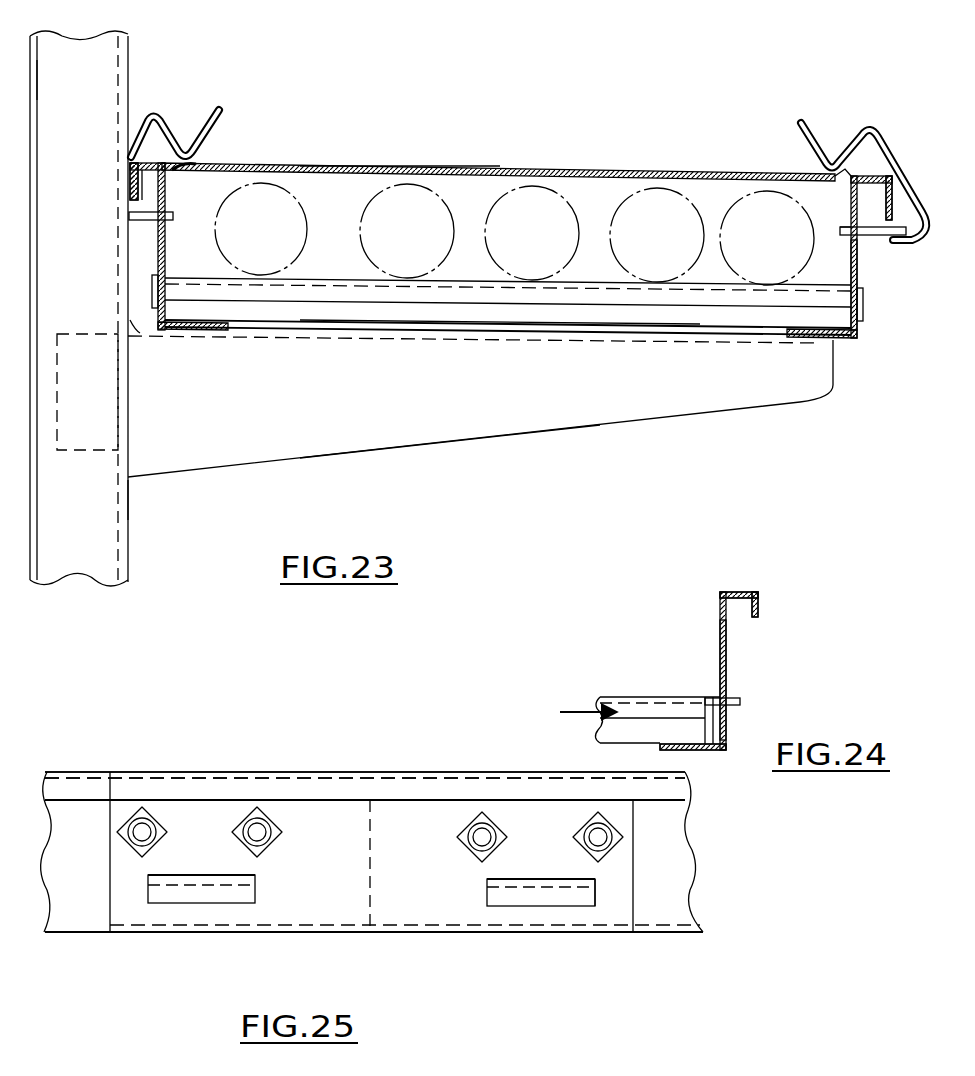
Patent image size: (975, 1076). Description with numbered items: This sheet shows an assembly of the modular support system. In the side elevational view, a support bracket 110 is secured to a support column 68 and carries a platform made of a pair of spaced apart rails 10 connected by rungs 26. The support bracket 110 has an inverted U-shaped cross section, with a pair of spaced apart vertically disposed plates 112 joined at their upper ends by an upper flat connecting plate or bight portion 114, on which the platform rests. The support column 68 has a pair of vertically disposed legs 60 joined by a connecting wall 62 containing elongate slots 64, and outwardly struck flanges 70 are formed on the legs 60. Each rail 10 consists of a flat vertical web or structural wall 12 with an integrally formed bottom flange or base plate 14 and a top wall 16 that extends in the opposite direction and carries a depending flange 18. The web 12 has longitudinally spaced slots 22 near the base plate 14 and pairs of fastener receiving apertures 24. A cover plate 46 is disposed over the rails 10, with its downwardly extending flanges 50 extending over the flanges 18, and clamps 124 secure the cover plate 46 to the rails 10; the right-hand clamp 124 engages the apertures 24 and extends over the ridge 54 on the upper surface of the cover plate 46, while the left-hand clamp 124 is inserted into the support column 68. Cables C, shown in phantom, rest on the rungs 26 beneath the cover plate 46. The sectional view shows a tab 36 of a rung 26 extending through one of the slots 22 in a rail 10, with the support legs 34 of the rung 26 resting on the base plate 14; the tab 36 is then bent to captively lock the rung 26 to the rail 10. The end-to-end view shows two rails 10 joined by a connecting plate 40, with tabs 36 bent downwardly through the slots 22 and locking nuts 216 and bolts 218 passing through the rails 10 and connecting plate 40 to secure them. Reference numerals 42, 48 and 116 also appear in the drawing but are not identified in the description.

In FIG. 23, the rail 10 is at (170, 250).
In FIG. 24, the rail 10 is at (755, 588).
In FIG. 25, the rail 10 is at (225, 766).
In FIG. 23, the structural wall 12 is at (858, 268).
In FIG. 24, the structural wall 12 is at (727, 640).
In FIG. 25, the structural wall 12 is at (705, 880).
In FIG. 23, the bottom flange 14 is at (215, 336).
In FIG. 24, the bottom flange 14 is at (700, 750).
In FIG. 25, the bottom flange 14 is at (85, 925).
In FIG. 24, the top wall 16 is at (735, 592).
In FIG. 25, the top wall 16 is at (70, 772).
In FIG. 23, the depending flange 18 is at (882, 222).
In FIG. 24, the depending flange 18 is at (760, 606).
In FIG. 25, the depending flange 18 is at (75, 788).
In FIG. 24, the slot 22 is at (716, 697).
In FIG. 25, the slot 22 is at (200, 875).
In FIG. 23, the fastener receiving aperture 24 is at (842, 245).
In FIG. 23, the rung 26 is at (328, 275).
In FIG. 24, the rung 26 is at (645, 697).
In FIG. 24, the support leg 34 is at (615, 732).
In FIG. 23, the tab 36 is at (153, 290).
In FIG. 24, the tab 36 is at (740, 700).
In FIG. 25, the tab 36 is at (255, 892).
In FIG. 25, the connecting plate 40 is at (325, 815).
In FIG. 25, the plate edge 42 is at (600, 884).
In FIG. 23, the cover plate 46 is at (632, 172).
In FIG. 23, the rail hatching 48 is at (392, 167).
In FIG. 23, the downwardly extending flange 50 is at (128, 180).
In FIG. 23, the ridge 54 is at (184, 160).
In FIG. 23, the leg 60 is at (96, 575).
In FIG. 23, the connecting wall 62 is at (128, 507).
In FIG. 23, the elongate slot 64 is at (143, 322).
In FIG. 23, the support column 68 is at (100, 36).
In FIG. 23, the outwardly struck flange 70 is at (40, 97).
In FIG. 23, the support arm 110 is at (430, 453).
In FIG. 23, the vertically disposed plate 112 is at (580, 405).
In FIG. 23, the bight portion 114 is at (558, 330).
In FIG. 23, the hidden mounting block 116 is at (90, 452).
In FIG. 23, the clamp 124 is at (152, 115).
In FIG. 25, the locking nut 216 is at (150, 819).
In FIG. 25, the bolt 218 is at (262, 840).
In FIG. 23, the cable C is at (265, 192).